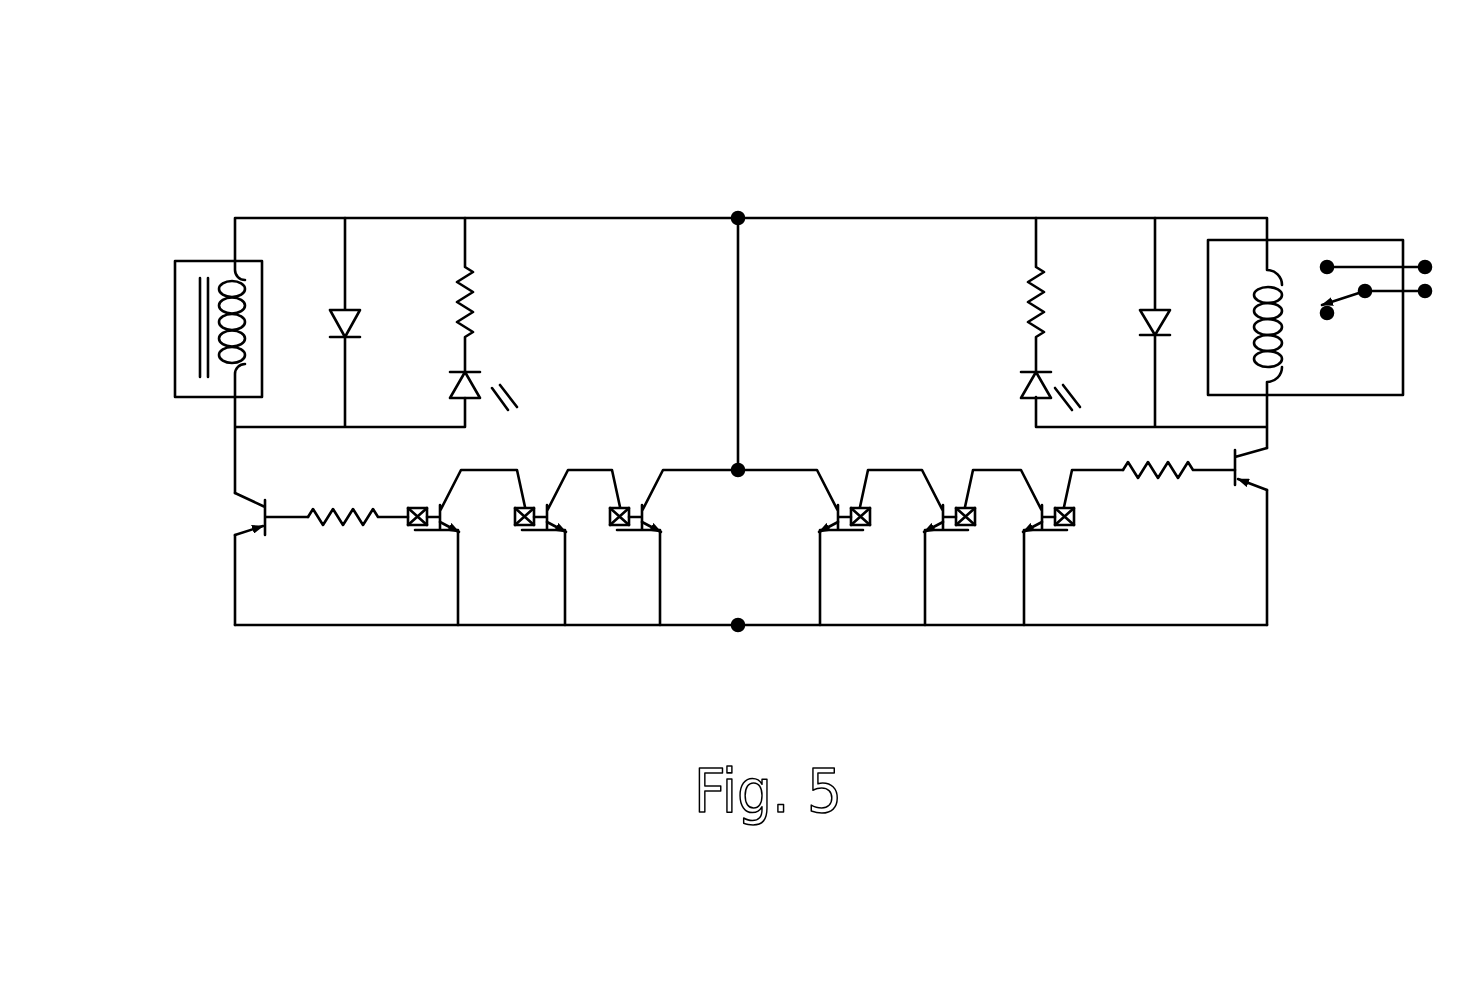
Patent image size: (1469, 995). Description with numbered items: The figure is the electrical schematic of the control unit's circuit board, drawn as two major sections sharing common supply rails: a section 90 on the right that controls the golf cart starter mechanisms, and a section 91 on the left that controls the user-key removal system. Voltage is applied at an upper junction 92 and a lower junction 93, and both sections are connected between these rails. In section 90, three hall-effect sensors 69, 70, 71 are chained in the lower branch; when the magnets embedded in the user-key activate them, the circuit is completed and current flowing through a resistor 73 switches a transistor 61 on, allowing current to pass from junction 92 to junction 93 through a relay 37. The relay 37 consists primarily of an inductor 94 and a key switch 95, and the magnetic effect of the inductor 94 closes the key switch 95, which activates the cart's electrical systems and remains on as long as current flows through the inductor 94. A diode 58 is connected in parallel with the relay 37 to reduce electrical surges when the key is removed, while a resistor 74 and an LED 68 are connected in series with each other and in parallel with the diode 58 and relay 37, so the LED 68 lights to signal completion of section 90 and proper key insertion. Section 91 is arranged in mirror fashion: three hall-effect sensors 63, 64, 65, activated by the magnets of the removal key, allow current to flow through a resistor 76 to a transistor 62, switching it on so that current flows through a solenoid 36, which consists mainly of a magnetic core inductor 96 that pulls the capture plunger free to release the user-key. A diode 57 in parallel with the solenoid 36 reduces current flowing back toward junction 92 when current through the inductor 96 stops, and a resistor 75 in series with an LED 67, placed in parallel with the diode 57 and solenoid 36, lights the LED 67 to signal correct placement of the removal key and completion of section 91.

The solenoid 36 is at (197, 261).
The magnetic core inductor 96 is at (203, 380).
The diode 57 is at (349, 327).
The resistor 75 is at (477, 313).
The LED 67 is at (473, 392).
The resistor 74 is at (1030, 315).
The LED 68 is at (1030, 380).
The diode 58 is at (1147, 317).
The relay 37 is at (1317, 240).
The inductor 94 is at (1283, 332).
The key switch 95 is at (1347, 297).
The section 90 is at (1115, 170).
The section 91 is at (413, 172).
The junction 92 is at (742, 217).
The junction 93 is at (735, 627).
The transistor 62 is at (257, 513).
The resistor 76 is at (348, 525).
The hall-effect sensor 65 is at (458, 517).
The hall-effect sensor 64 is at (557, 517).
The hall-effect sensor 63 is at (665, 517).
The hall-effect sensor 71 is at (823, 515).
The hall-effect sensor 70 is at (930, 515).
The hall-effect sensor 69 is at (1028, 515).
The resistor 73 is at (1152, 477).
The transistor 61 is at (1245, 470).